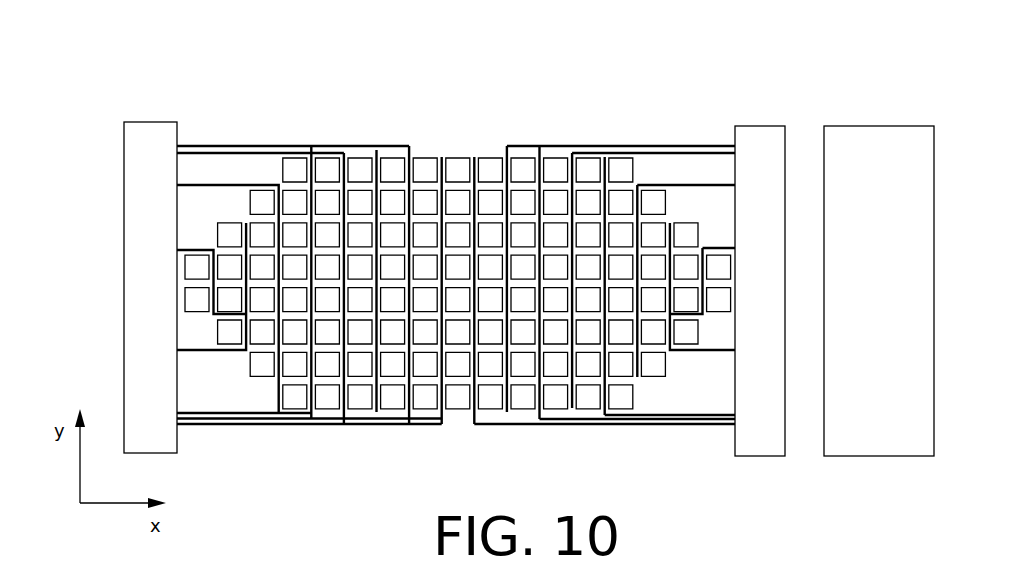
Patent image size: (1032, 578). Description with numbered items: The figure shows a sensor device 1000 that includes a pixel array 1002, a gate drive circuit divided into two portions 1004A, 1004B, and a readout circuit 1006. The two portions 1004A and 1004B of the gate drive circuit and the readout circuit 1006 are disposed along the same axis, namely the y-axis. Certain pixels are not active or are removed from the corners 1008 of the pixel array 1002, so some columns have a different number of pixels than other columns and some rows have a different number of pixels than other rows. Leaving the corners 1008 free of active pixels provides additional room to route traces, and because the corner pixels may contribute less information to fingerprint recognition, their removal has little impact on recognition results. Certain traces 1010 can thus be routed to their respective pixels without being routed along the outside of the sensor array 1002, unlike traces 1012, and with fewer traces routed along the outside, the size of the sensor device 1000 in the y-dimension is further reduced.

The sensor device 1000 is at (188, 82).
The pixel array 1002 is at (489, 124).
The first portion of gate drive circuit 1004A is at (125, 230).
The second portion of gate drive circuit 1004B is at (770, 126).
The readout circuit 1006 is at (855, 316).
The corners of the pixel array 1008 is at (672, 398).
The traces 1010 is at (192, 249).
The traces 1012 is at (367, 147).